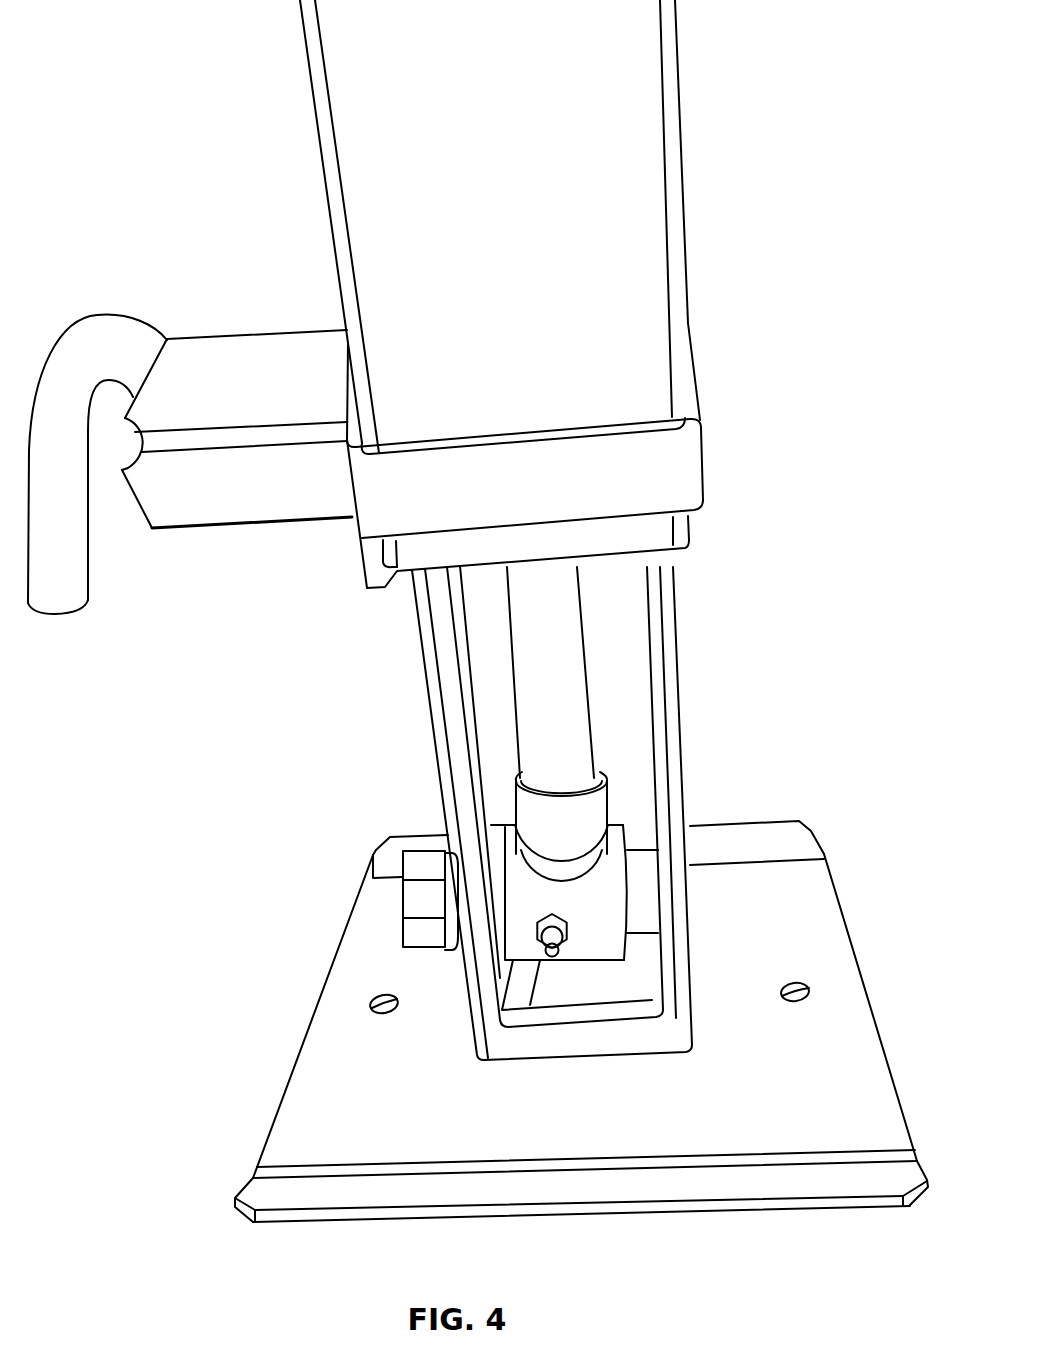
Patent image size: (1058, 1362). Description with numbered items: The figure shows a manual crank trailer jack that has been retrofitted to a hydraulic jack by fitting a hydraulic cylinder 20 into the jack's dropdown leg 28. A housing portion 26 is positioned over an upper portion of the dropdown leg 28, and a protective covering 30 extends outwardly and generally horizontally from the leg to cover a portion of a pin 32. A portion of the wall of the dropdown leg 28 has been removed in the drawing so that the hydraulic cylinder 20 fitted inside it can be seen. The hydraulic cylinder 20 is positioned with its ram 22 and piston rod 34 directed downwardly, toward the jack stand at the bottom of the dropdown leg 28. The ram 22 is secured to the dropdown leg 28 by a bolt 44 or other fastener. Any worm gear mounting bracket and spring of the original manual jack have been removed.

The hydraulic cylinder 20 is at (570, 605).
The ram 22 is at (601, 917).
The housing portion 26 is at (660, 167).
The dropdown leg 28 is at (682, 908).
The protective covering 30 is at (233, 360).
The pin 32 is at (83, 328).
The piston rod 34 is at (570, 683).
The bolt 44 is at (413, 917).